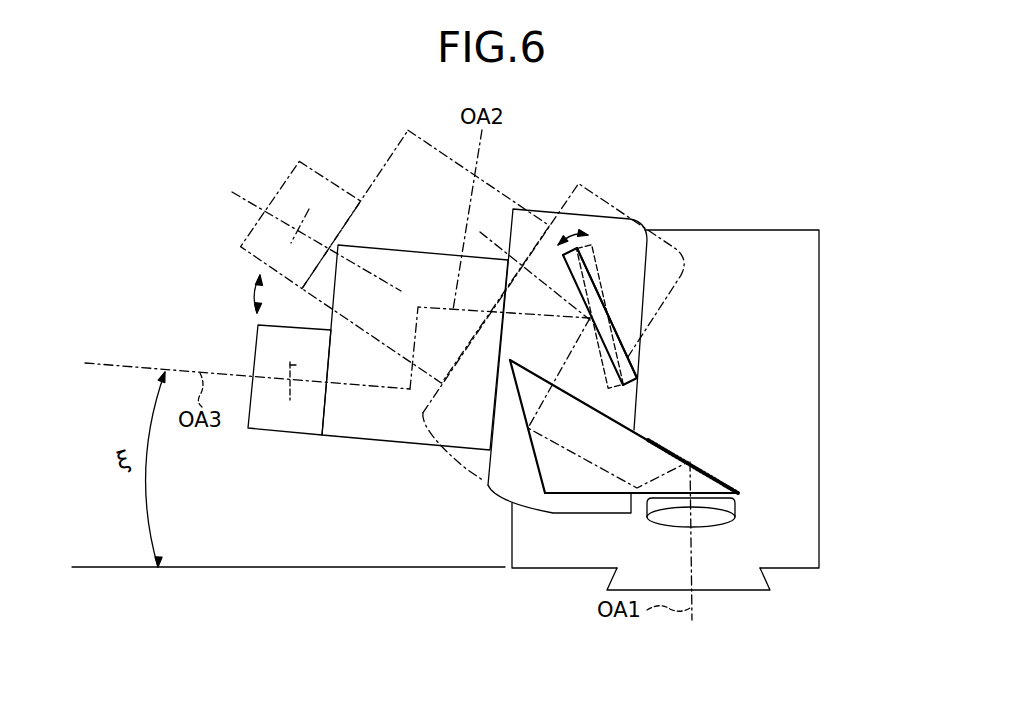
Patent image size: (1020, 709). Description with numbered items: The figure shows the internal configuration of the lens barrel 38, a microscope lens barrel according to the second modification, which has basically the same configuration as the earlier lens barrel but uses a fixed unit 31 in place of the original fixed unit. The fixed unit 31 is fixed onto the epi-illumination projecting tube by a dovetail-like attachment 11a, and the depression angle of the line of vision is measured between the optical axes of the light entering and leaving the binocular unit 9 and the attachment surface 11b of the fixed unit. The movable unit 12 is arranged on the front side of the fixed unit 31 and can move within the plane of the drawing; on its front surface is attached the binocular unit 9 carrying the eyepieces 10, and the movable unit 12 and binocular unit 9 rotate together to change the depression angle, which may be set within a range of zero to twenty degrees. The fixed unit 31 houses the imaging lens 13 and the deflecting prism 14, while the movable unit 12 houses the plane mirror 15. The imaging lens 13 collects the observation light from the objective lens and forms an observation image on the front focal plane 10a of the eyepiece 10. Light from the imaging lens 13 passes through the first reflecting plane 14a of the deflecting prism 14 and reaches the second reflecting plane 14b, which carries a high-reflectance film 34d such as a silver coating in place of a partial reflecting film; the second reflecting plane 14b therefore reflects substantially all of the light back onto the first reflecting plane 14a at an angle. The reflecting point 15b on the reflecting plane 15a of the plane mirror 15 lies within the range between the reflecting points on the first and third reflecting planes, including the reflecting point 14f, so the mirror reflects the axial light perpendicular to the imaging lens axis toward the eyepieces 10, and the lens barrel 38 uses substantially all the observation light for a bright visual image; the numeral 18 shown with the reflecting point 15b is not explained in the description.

The binocular unit 9 is at (370, 440).
The eyepiece 10 is at (280, 433).
The front focal plane 10a is at (290, 365).
The attachment 11a is at (743, 592).
The attachment surface 11b is at (532, 570).
The movable unit 12 is at (585, 210).
The imaging lens 13 is at (737, 513).
The deflecting prism 14 is at (627, 459).
The first reflecting plane 14a is at (570, 495).
The second reflecting plane 14b is at (607, 416).
The reflecting point 14f is at (528, 430).
The plane mirror 15 is at (617, 266).
The reflecting plane 15a is at (571, 263).
The reflecting point 15b is at (612, 335).
The reflecting surface 18 is at (592, 318).
The fixed unit 31 is at (820, 380).
The high-reflectance film 34d is at (705, 472).
The lens barrel 38 is at (762, 198).